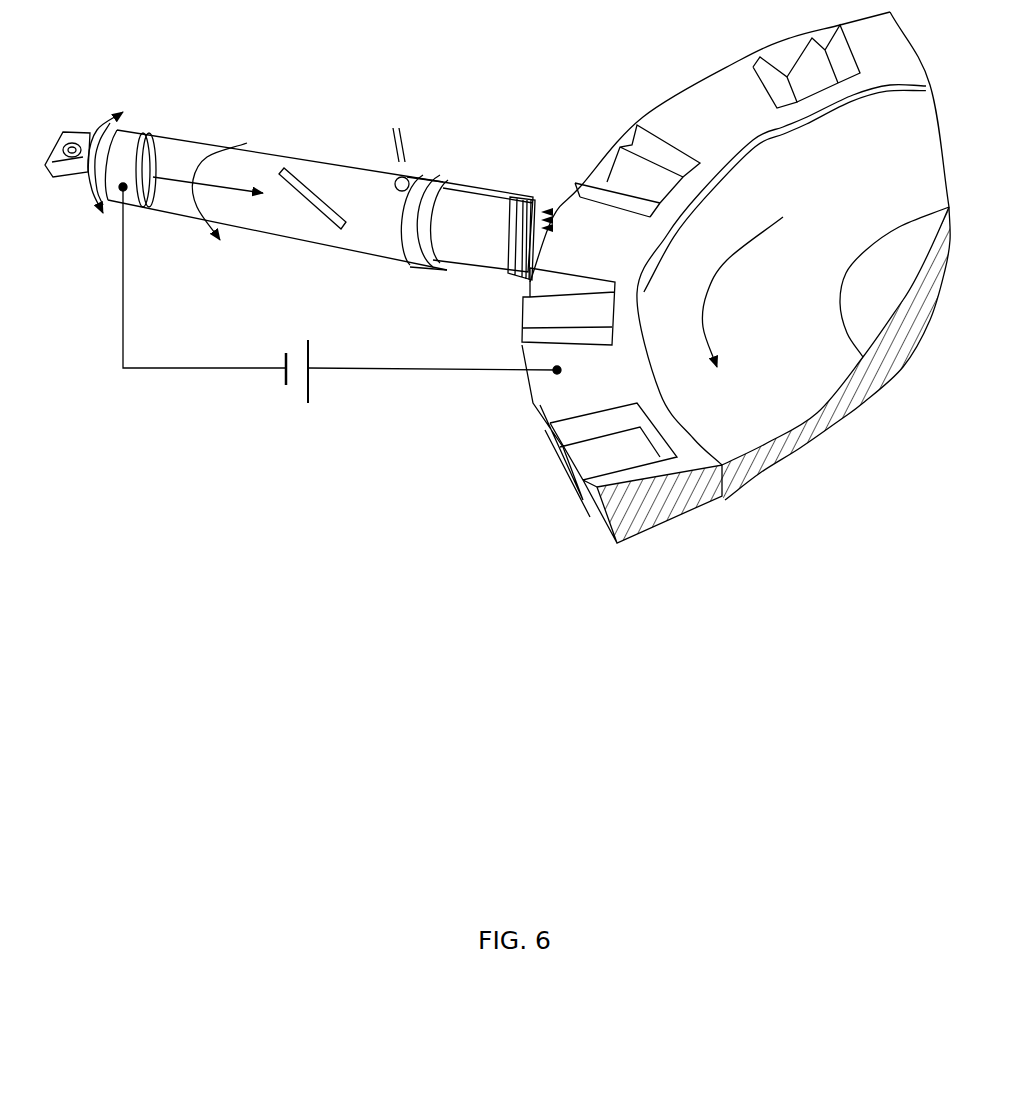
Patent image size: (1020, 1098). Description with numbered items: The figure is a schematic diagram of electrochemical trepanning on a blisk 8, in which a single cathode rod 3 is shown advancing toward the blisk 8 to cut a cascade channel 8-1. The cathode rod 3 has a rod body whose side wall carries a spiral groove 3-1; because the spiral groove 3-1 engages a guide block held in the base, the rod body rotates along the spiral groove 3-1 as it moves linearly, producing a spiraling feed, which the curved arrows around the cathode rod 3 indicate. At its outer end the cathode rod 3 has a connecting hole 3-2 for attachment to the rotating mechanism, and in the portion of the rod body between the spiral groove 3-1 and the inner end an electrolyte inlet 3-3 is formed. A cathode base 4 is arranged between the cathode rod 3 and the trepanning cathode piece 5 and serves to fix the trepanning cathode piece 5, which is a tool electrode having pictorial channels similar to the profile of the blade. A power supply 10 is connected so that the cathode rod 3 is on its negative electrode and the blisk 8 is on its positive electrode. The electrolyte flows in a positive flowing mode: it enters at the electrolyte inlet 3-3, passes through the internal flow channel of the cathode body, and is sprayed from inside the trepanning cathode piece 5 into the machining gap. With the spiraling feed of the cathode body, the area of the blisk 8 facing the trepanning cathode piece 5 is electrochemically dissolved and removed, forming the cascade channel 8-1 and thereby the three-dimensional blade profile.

The cathode rod 3 is at (173, 163).
The spiral groove 3-1 is at (313, 190).
The connecting hole 3-2 is at (75, 135).
The electrolyte inlet 3-3 is at (407, 180).
The cathode base 4 is at (490, 210).
The trepanning cathode piece 5 is at (533, 198).
The blisk 8 is at (700, 103).
The cascade channel 8-1 is at (623, 170).
The power supply 10 is at (300, 388).